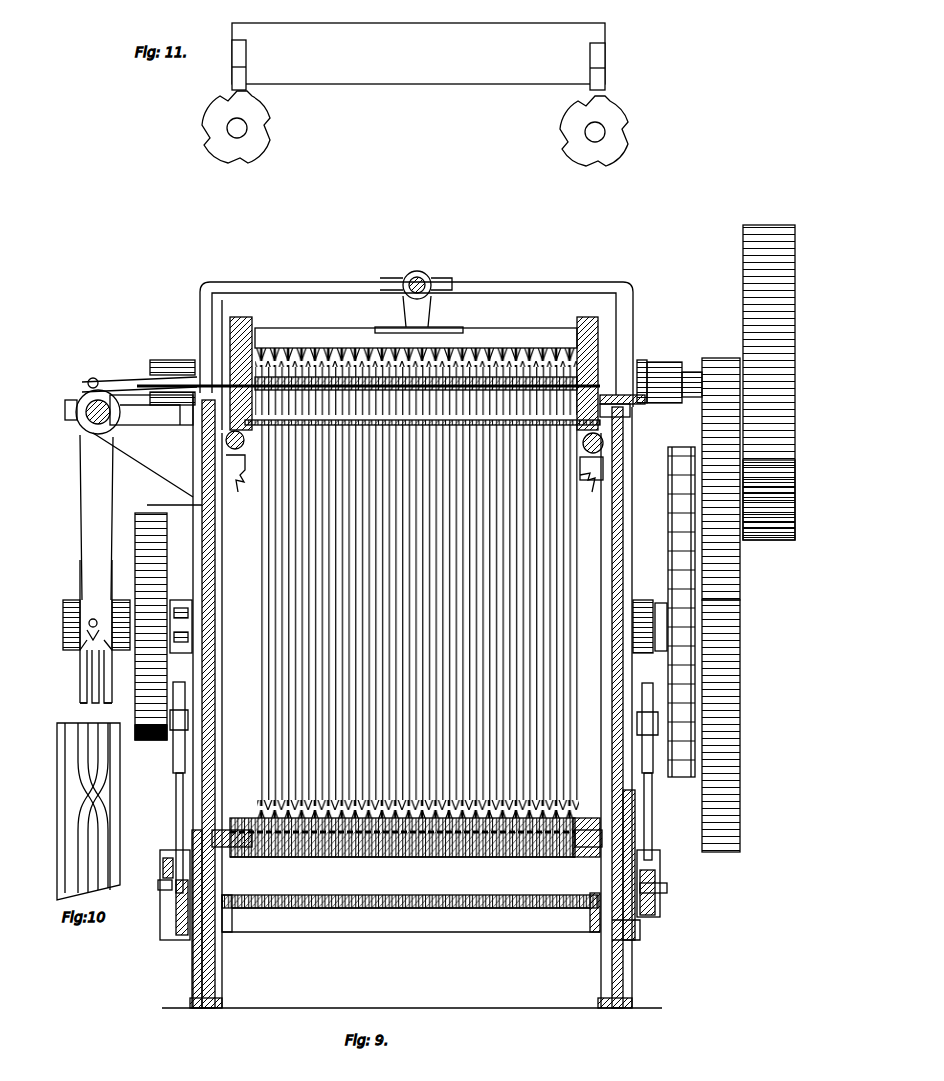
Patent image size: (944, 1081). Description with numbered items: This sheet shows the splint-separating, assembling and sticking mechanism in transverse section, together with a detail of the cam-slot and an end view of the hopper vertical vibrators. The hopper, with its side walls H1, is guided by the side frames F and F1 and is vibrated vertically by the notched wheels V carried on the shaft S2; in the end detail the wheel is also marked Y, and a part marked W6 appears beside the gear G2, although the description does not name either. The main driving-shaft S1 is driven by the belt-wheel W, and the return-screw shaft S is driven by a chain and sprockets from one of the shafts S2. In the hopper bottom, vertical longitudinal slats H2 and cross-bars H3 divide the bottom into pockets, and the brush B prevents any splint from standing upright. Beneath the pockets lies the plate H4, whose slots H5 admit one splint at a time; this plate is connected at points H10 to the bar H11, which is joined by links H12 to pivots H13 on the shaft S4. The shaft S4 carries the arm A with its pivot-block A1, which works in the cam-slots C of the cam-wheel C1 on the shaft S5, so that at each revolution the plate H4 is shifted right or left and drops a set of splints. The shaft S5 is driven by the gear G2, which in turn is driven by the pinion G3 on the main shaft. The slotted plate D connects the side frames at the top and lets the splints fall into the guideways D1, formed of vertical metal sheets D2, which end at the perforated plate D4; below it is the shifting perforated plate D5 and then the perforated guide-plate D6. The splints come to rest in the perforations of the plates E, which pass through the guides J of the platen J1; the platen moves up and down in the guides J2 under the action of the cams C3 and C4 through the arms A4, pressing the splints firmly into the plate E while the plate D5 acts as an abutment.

In FIG. 11, the side walls H1 is at (418, 56).
In FIG. 9, the side walls H1 is at (244, 361).
In FIG. 11, the shaft S2 is at (240, 126).
In FIG. 9, the shaft S2 is at (226, 447).
In FIG. 11, the ratchet wheel Y is at (415, 128).
In FIG. 9, the belt-wheel W is at (766, 225).
In FIG. 9, the return-screw shaft S is at (422, 280).
In FIG. 9, the side frame F1 is at (200, 345).
In FIG. 9, the plate H4 is at (600, 380).
In FIG. 9, the brush B is at (416, 375).
In FIG. 9, the cross-bars H3 is at (416, 351).
In FIG. 9, the longitudinal slats H2 is at (416, 375).
In FIG. 9, the slots H5 is at (528, 360).
In FIG. 9, the chutes or guideways D1 is at (268, 712).
In FIG. 9, the vertical sheets of metal D2 is at (265, 745).
In FIG. 9, the shifting perforated plate D5 is at (242, 818).
In FIG. 9, the perforated plate D4 is at (248, 815).
In FIG. 9, the perforated guide-plate D6 is at (402, 865).
In FIG. 9, the guides J is at (230, 900).
In FIG. 9, the perforated plates E is at (441, 902).
In FIG. 9, the platen J1 is at (290, 935).
In FIG. 9, the plate D is at (151, 425).
In FIG. 9, the shaft S4 is at (88, 420).
In FIG. 9, the links H12 is at (123, 380).
In FIG. 9, the pivots H13 is at (89, 382).
In FIG. 9, the points H10 is at (172, 356).
In FIG. 9, the bar H11 is at (180, 402).
In FIG. 9, the notched wheels V is at (414, 480).
In FIG. 9, the side frames F is at (200, 505).
In FIG. 9, the arm A is at (82, 495).
In FIG. 9, the cam-slots C is at (78, 665).
In FIG. 9, the cam-wheel C1 is at (78, 700).
In FIG. 10, the cam-wheel C1 is at (57, 808).
In FIG. 9, the pivot-block A1 is at (88, 625).
In FIG. 9, the shaft S5 is at (68, 605).
In FIG. 9, the cam C4 is at (155, 740).
In FIG. 9, the arms A4 is at (172, 700).
In FIG. 9, the guides J2 is at (178, 930).
In FIG. 9, the main driving-shaft S1 is at (690, 372).
In FIG. 9, the pinion G3 is at (725, 358).
In FIG. 9, the gear G2 is at (740, 822).
In FIG. 9, the cam C3 is at (672, 790).
In FIG. 9, the bracket W6 is at (661, 770).